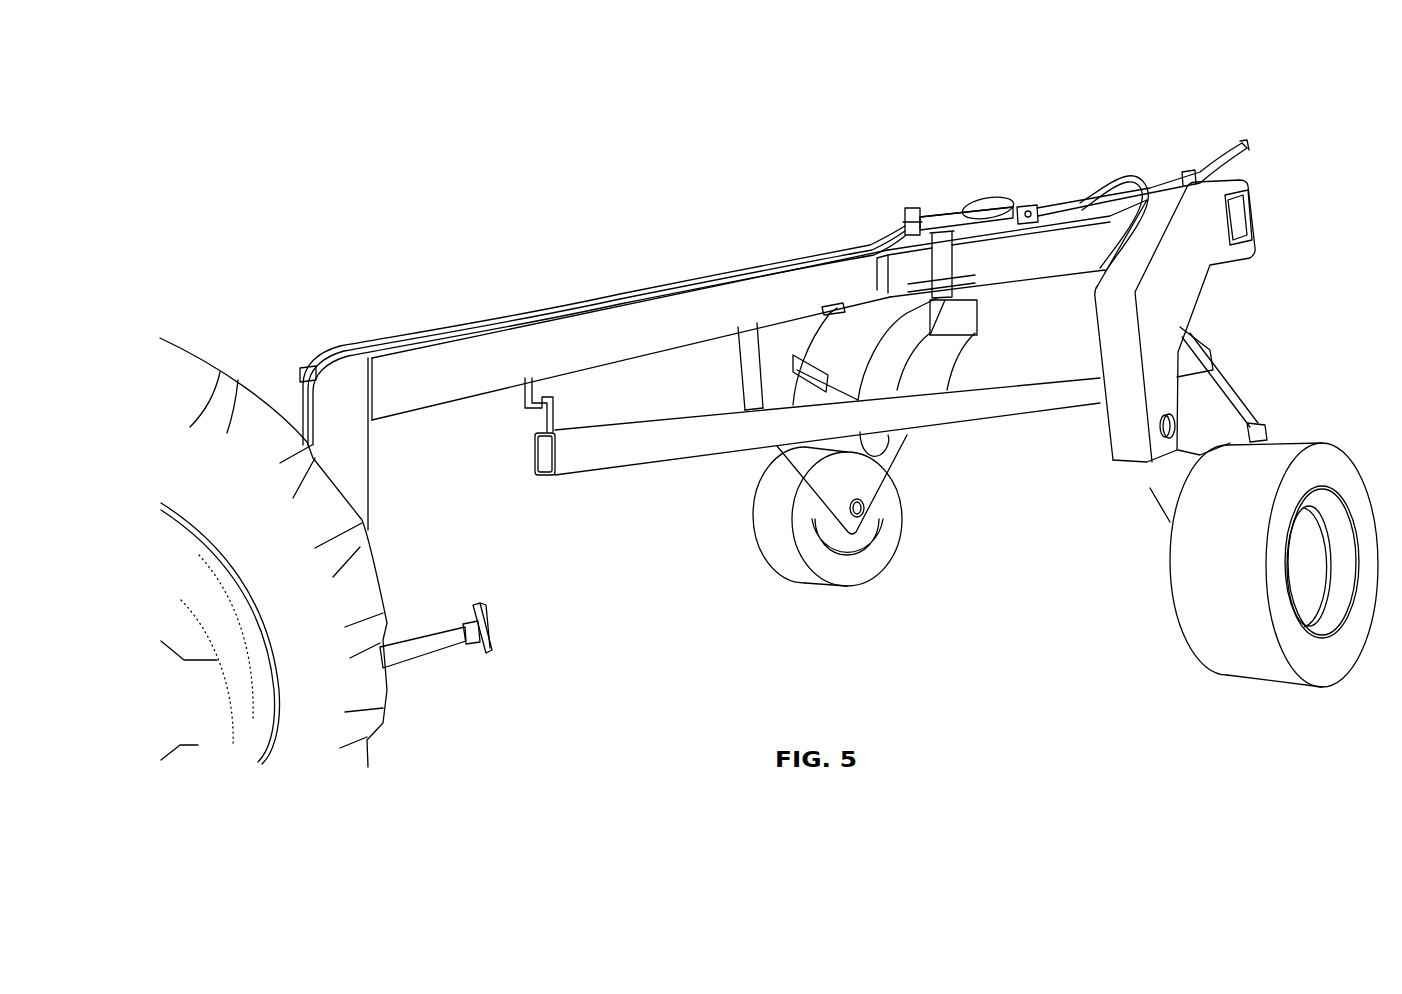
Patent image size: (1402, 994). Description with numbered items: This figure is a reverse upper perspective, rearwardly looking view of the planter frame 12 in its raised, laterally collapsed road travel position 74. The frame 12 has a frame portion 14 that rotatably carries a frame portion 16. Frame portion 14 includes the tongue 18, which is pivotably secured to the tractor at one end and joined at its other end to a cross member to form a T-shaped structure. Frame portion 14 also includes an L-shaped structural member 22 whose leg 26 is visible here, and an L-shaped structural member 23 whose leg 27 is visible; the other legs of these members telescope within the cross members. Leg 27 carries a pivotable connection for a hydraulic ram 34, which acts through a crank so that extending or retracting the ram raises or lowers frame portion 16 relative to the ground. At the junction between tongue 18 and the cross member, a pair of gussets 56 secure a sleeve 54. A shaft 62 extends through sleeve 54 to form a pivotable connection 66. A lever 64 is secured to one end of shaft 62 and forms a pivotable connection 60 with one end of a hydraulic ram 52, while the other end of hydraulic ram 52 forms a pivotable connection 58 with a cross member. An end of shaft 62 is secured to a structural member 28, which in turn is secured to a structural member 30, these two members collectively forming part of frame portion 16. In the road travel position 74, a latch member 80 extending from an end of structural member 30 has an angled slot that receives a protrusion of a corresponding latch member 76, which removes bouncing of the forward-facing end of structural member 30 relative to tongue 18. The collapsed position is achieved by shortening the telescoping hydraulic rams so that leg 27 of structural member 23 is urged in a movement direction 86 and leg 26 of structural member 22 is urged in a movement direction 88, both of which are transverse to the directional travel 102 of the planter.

The frame 12 is at (452, 262).
The frame portion 14 is at (542, 262).
The frame portion 16 is at (676, 590).
The tongue 18 is at (657, 302).
The structural member 22 is at (767, 178).
The structural member 23 is at (1258, 125).
The leg 26 is at (732, 355).
The leg 27 is at (1207, 270).
The structural member 28 is at (955, 368).
The structural member 30 is at (627, 470).
The hydraulic ram 34 is at (1215, 362).
The hydraulic ram 52 is at (980, 228).
The sleeve 54 is at (928, 266).
The gussets 56 is at (972, 277).
The pivotable connection 58 is at (1024, 212).
The pivotable connection 60 is at (918, 223).
The shaft 62 is at (973, 298).
The lever 64 is at (908, 215).
The pivotable connection 66 is at (968, 213).
The road travel position 74 is at (742, 620).
The latch member 76 is at (510, 388).
The latch member 80 is at (530, 436).
The movement direction 86 is at (1160, 133).
The movement direction 88 is at (925, 166).
The directional travel 102 is at (903, 600).